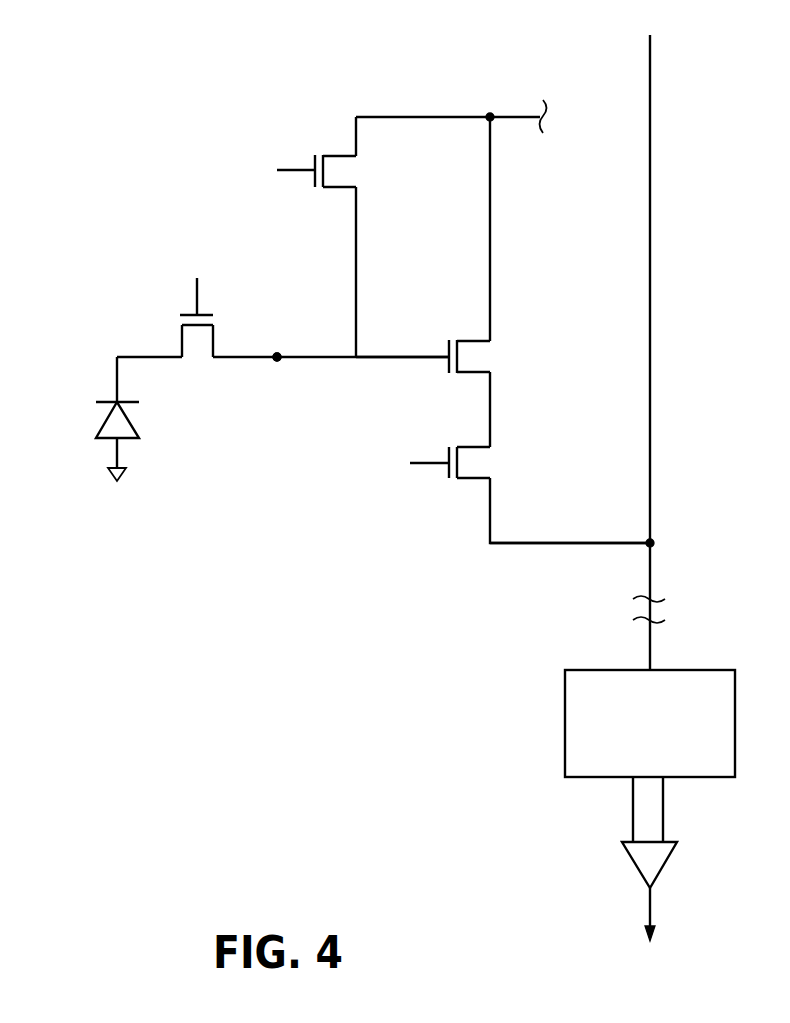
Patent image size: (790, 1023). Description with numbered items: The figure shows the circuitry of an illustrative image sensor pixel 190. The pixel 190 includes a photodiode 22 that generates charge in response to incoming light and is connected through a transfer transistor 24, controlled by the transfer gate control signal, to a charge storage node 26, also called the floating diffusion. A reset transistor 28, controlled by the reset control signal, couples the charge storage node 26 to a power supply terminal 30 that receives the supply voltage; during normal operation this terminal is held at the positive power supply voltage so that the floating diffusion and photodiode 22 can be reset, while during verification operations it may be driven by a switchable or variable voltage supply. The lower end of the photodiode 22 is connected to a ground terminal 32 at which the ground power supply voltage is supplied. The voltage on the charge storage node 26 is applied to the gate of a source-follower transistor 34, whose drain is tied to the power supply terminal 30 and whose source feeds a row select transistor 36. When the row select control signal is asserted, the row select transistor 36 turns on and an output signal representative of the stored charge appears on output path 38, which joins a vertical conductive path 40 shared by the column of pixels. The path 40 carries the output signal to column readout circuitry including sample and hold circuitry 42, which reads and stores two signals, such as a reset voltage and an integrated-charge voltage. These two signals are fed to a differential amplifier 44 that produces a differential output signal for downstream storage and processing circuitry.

The pixel 190 is at (170, 113).
The photodiode 22 is at (112, 423).
The transfer transistor 24 is at (186, 341).
The charge storage node 26 is at (278, 352).
The reset transistor 28 is at (342, 158).
The power supply terminal 30 is at (522, 112).
The ground terminal 32 is at (108, 480).
The source-follower transistor 34 is at (475, 345).
The row select transistor 36 is at (475, 483).
The output path 38 is at (548, 548).
The vertical conductive path 40 is at (651, 397).
The sample and hold circuitry 42 is at (575, 723).
The differential amplifier 44 is at (645, 866).